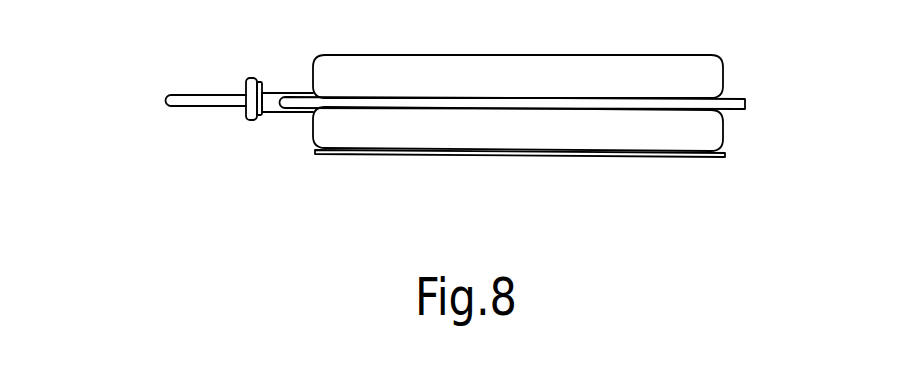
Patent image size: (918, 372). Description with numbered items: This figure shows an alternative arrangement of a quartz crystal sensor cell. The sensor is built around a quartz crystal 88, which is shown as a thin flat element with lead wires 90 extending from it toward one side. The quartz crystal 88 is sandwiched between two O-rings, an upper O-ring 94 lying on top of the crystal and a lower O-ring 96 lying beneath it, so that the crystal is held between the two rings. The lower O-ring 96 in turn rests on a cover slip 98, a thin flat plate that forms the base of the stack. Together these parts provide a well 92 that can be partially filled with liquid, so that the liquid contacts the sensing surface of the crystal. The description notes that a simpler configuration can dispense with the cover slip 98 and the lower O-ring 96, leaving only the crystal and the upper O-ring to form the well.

The quartz crystal 88 is at (293, 100).
The lead wires 90 is at (285, 113).
The well 92 is at (545, 109).
The O-ring 94 is at (718, 78).
The O-ring 96 is at (718, 127).
The cover slip 98 is at (623, 157).